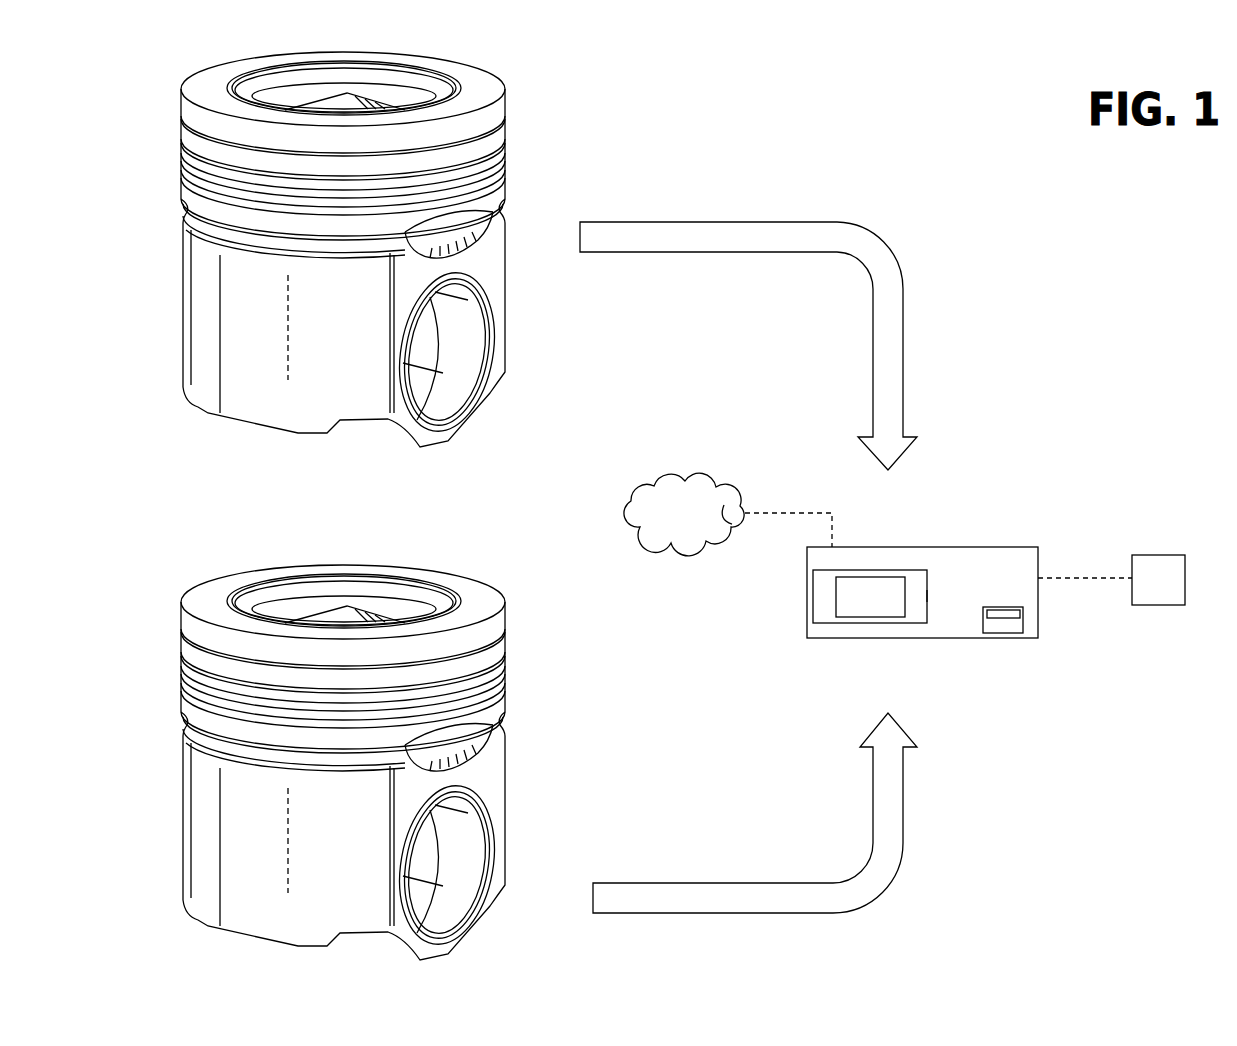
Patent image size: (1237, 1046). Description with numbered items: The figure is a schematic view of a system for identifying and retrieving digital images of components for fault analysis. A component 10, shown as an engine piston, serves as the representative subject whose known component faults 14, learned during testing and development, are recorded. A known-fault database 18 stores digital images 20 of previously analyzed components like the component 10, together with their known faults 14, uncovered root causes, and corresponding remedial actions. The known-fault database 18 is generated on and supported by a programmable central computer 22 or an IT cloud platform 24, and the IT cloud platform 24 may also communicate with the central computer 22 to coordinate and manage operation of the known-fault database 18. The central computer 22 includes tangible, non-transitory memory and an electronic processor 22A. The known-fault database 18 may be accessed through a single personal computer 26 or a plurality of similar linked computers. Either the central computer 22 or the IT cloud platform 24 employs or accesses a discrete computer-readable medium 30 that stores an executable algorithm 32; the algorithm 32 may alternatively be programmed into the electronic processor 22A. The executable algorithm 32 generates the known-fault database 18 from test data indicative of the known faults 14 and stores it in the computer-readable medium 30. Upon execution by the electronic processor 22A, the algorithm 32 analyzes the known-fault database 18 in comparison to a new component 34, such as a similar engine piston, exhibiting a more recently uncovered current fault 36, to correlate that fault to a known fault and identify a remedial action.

The component 10 is at (527, 110).
The known component fault 14 is at (903, 365).
The known-fault database 18 is at (1023, 627).
The digital image 20 is at (1020, 614).
The central computer 22 is at (973, 596).
The electronic processor 22A is at (927, 596).
The IT cloud platform 24 is at (695, 526).
The personal computer 26 is at (1145, 592).
The computer-readable medium 30 is at (867, 623).
The executable algorithm 32 is at (857, 609).
The new component 34 is at (527, 613).
The current fault 36 is at (903, 810).